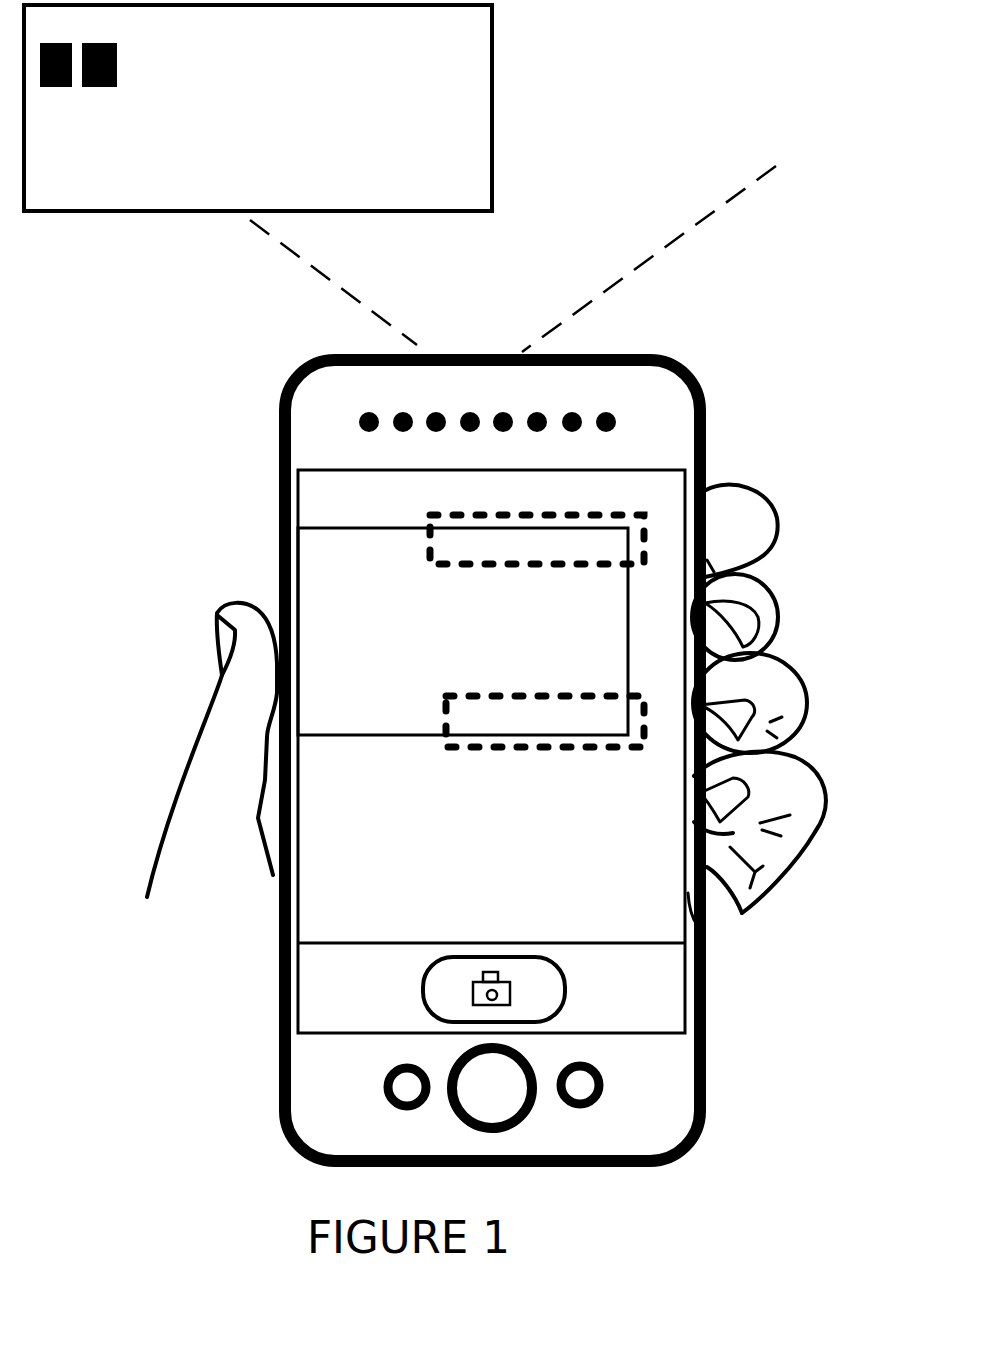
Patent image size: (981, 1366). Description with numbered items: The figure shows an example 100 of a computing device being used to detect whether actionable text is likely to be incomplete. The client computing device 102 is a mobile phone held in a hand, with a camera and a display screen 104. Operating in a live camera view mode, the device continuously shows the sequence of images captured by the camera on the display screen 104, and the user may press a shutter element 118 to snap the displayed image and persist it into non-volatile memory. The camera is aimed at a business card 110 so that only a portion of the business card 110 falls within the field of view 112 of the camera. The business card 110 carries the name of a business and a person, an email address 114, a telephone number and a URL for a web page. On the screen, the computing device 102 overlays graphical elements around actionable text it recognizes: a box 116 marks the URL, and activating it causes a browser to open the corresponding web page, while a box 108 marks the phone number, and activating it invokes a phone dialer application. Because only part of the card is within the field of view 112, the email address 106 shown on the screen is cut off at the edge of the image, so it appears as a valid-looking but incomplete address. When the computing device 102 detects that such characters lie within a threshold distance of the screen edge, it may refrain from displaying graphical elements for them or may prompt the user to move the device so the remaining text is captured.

The example 100 is at (148, 482).
The client computing device 102 is at (280, 1112).
The display screen 104 is at (302, 887).
The email address 106 is at (508, 642).
The box 108 is at (640, 753).
The business card 110 is at (320, 147).
The field of view 112 is at (538, 343).
The email address 114 is at (388, 120).
The box 116 is at (625, 510).
The shutter element 118 is at (568, 995).